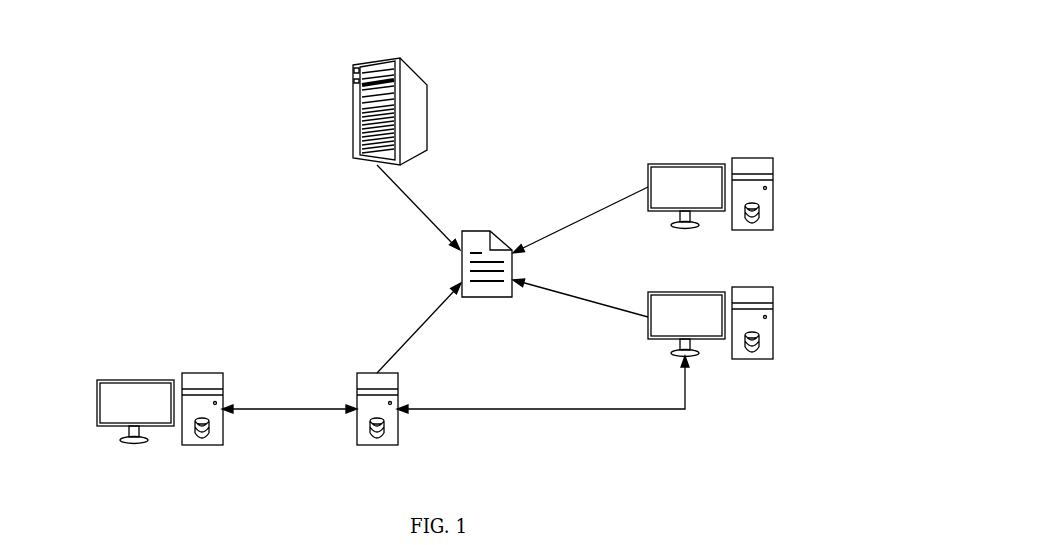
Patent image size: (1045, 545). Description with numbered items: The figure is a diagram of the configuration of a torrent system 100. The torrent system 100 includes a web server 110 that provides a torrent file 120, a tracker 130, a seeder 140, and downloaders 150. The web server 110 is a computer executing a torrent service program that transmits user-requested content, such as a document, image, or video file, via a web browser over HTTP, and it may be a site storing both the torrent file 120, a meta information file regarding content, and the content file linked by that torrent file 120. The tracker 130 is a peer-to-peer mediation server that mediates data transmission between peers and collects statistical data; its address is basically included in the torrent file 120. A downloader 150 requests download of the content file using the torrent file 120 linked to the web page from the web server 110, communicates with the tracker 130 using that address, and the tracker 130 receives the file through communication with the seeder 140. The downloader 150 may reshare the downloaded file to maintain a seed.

The torrent system 100 is at (806, 44).
The web server 110 is at (353, 101).
The torrent file 120 is at (488, 298).
The tracker 130 is at (355, 432).
The seeder 140 is at (97, 403).
The downloader 150 is at (775, 190).